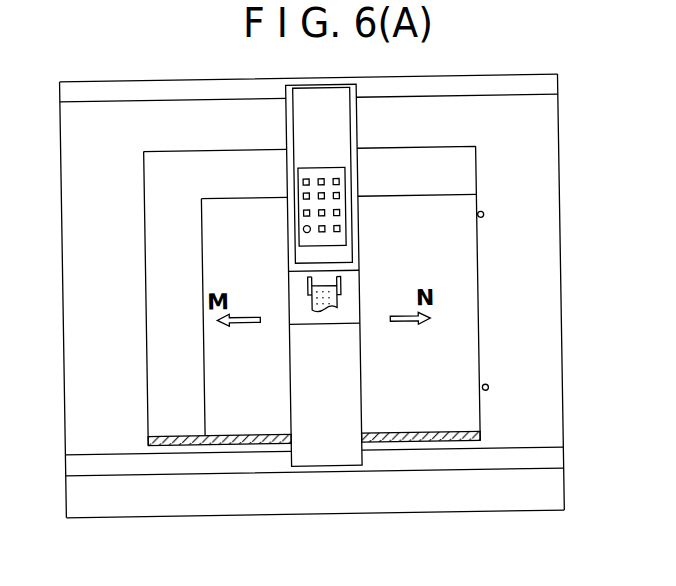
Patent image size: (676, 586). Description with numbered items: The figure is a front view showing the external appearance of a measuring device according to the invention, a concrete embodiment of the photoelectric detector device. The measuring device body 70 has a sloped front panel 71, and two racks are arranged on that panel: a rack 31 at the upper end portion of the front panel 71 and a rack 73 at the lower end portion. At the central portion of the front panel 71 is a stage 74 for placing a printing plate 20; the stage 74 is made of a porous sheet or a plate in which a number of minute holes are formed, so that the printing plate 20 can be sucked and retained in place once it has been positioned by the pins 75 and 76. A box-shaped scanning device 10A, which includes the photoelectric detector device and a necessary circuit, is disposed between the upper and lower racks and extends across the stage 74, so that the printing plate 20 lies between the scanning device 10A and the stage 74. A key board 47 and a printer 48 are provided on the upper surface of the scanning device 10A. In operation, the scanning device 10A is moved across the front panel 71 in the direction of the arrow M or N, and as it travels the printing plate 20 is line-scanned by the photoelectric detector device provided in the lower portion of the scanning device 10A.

The scanning device 10A is at (360, 409).
The printing plate 20 is at (478, 285).
The rack 31 is at (494, 80).
The key board 47 is at (322, 168).
The printer 48 is at (341, 286).
The measuring device body 70 is at (183, 514).
The front panel 71 is at (561, 129).
The rack 73 is at (80, 462).
The stage 74 is at (423, 155).
The pin 75 is at (485, 215).
The pin 76 is at (487, 388).